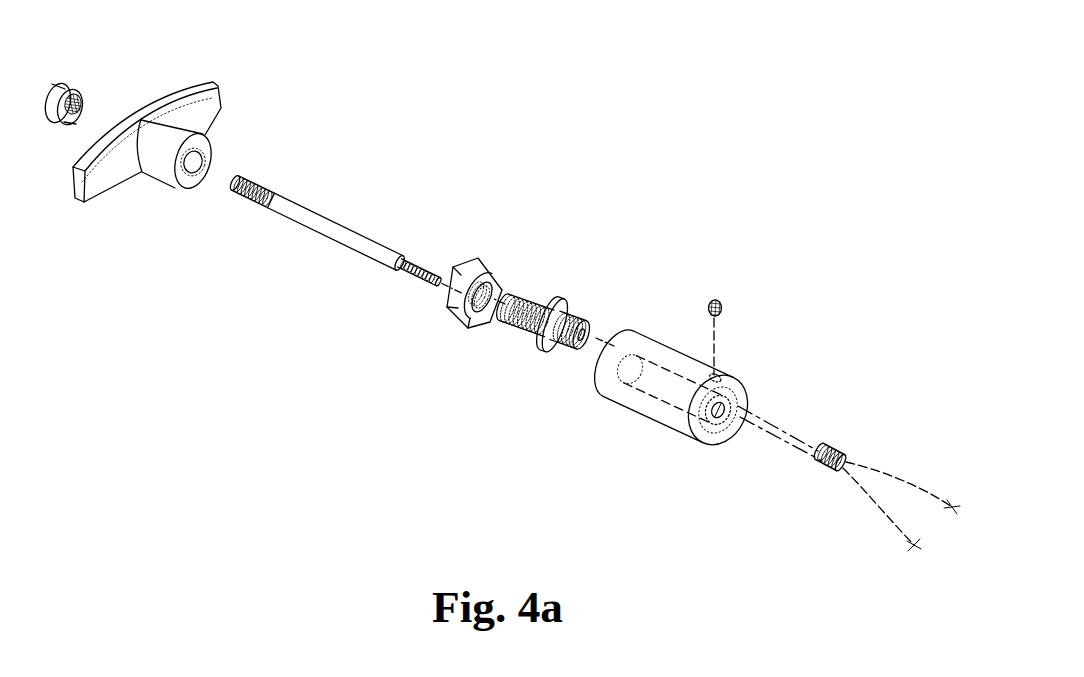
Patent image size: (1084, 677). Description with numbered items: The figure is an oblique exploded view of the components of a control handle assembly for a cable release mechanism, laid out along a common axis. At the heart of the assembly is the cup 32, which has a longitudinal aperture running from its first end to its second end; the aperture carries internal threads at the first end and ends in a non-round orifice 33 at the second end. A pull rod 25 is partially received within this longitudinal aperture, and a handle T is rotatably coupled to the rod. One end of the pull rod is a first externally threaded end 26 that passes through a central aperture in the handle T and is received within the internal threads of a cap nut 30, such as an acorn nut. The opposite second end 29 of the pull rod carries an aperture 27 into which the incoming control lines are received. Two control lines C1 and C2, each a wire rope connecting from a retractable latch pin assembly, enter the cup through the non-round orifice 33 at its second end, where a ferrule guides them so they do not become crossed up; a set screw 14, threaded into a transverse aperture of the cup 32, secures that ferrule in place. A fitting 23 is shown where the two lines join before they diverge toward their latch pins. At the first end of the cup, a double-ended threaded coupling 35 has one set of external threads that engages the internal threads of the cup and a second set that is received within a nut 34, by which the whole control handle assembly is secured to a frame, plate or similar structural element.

The handle T is at (220, 103).
The cap nut 30 is at (84, 88).
The pull rod 25 is at (314, 203).
The first externally threaded end 26 is at (249, 196).
The aperture 27 is at (410, 277).
The second end 29 is at (421, 256).
The nut 34 is at (498, 269).
The double-ended threaded coupling 35 is at (561, 316).
The cup 32 is at (646, 425).
The non-round orifice 33 is at (733, 418).
The set screw 14 is at (724, 303).
The cable sleeve 23 is at (843, 450).
The control line C1 is at (951, 500).
The control line C2 is at (912, 549).